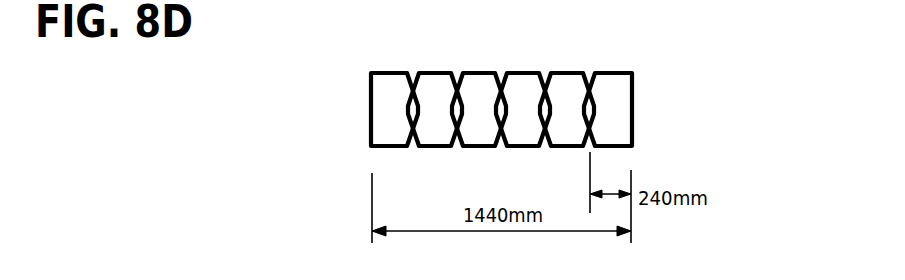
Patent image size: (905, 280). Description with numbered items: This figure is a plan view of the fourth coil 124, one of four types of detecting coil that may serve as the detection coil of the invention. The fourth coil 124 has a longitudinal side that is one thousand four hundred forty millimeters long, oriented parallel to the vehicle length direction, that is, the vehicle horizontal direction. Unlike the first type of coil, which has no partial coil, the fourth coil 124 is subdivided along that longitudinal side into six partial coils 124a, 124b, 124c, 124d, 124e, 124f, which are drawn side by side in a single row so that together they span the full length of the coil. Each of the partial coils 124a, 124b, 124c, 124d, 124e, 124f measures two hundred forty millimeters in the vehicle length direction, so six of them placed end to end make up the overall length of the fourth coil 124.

The fourth coil 124 is at (645, 73).
The partial coil 124a is at (389, 72).
The partial coil 124b is at (432, 72).
The partial coil 124c is at (480, 72).
The partial coil 124d is at (523, 72).
The partial coil 124e is at (568, 72).
The partial coil 124f is at (621, 72).